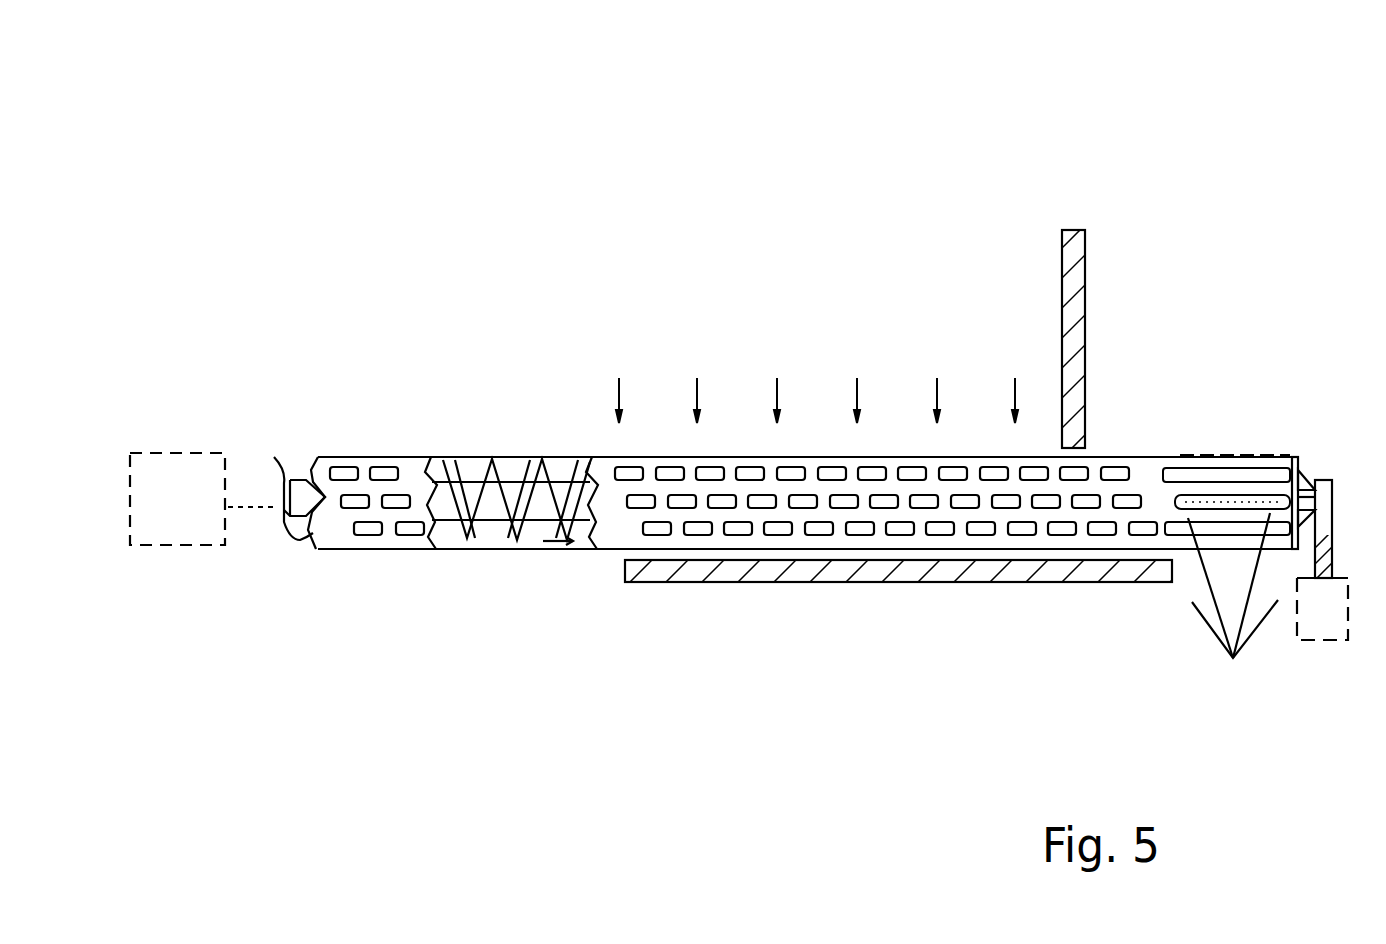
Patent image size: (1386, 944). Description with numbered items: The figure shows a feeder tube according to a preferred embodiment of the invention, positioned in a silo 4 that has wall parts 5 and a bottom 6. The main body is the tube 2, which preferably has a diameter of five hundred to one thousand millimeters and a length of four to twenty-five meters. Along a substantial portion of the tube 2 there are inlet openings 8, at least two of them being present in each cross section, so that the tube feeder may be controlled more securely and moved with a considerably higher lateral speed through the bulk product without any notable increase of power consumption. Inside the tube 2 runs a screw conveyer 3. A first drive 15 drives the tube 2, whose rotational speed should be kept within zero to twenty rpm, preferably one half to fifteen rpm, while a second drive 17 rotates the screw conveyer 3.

The tube 2 is at (985, 541).
The screw conveyer 3 is at (528, 548).
The silo 4 is at (843, 285).
The wall parts 5 is at (1068, 288).
The bottom 6 is at (840, 571).
The inlet openings 8 is at (657, 530).
The first drive 15 is at (1323, 620).
The second drive 17 is at (183, 518).